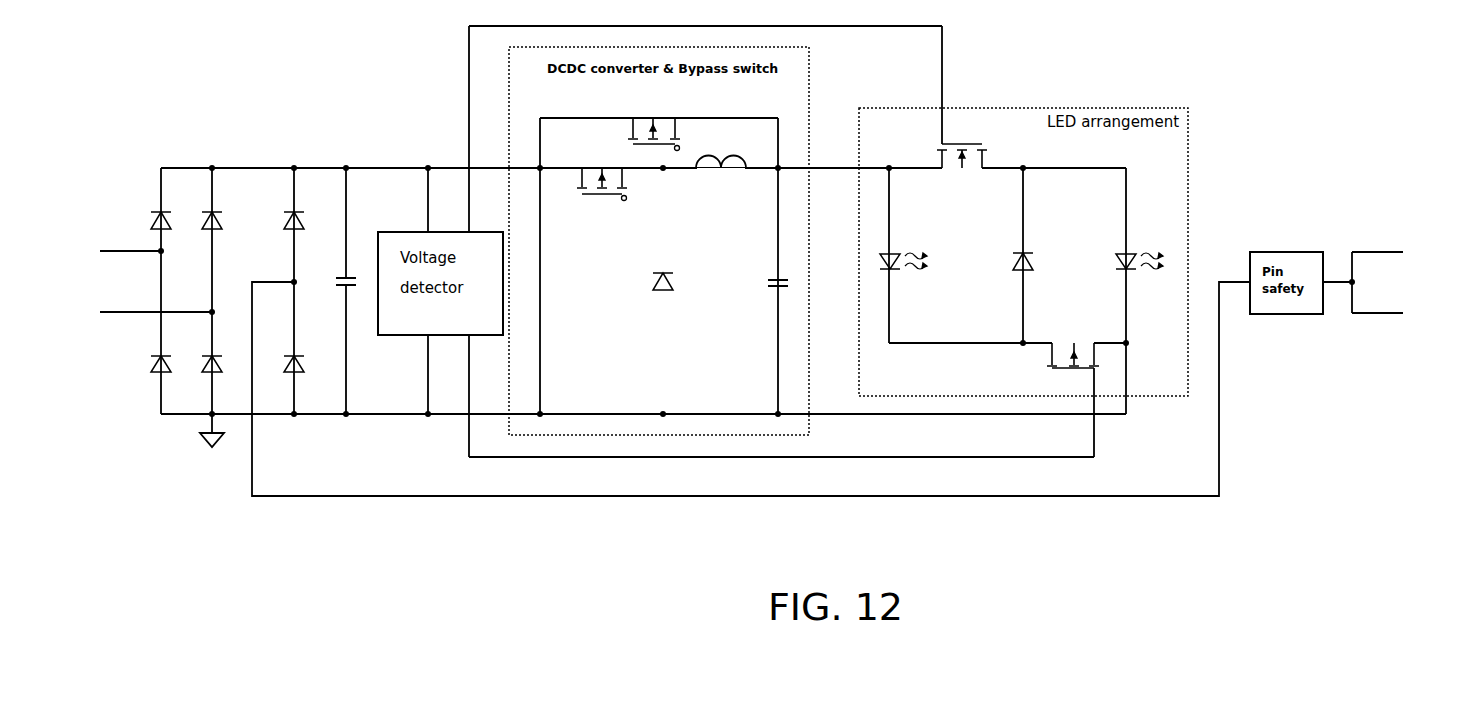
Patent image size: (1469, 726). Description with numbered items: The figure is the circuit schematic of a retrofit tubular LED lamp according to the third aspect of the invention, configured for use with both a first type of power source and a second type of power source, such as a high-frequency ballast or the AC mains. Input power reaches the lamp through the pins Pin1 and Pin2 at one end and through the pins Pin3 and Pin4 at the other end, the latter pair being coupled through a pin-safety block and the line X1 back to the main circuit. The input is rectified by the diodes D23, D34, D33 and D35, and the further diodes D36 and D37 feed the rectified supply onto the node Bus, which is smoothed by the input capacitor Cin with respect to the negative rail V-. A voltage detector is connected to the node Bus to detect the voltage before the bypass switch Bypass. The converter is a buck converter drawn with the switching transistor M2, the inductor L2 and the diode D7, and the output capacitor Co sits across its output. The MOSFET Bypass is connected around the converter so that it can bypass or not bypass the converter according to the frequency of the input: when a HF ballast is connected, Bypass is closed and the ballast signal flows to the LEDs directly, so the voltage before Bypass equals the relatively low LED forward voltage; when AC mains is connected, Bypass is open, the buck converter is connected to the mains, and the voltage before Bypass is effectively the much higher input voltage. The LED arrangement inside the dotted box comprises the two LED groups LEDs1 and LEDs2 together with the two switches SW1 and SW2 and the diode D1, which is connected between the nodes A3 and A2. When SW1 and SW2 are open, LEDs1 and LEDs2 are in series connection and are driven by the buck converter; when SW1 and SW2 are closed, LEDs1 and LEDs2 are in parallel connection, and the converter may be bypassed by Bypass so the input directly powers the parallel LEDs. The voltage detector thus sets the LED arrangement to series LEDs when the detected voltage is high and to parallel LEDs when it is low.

The rectifier diode D23 is at (149, 211).
The rectifier diode D34 is at (200, 211).
The diode D36 is at (282, 211).
The rectifier diode D33 is at (149, 354).
The rectifier diode D35 is at (200, 354).
The diode D37 is at (282, 354).
The first input pin Pin1 is at (98, 251).
The second input pin Pin2 is at (98, 312).
The bus voltage node Bus is at (294, 159).
The input capacitor Cin is at (355, 272).
The converter switch transistor M2 is at (602, 173).
The bypass switch Bypass is at (650, 122).
The inductor L2 is at (721, 158).
The freewheeling diode D7 is at (656, 272).
The output capacitor Co is at (785, 273).
The negative output voltage node V- is at (833, 406).
The LEDs LEDs1 is at (910, 252).
The switch SW1 is at (962, 171).
The node A3 is at (1054, 159).
The diode D1 is at (1031, 252).
The LEDs LEDs2 is at (1146, 252).
The node A2 is at (970, 334).
The switch SW2 is at (1073, 343).
The control signal line X1 is at (735, 488).
The third pin Pin3 is at (1402, 252).
The fourth pin Pin4 is at (1402, 313).